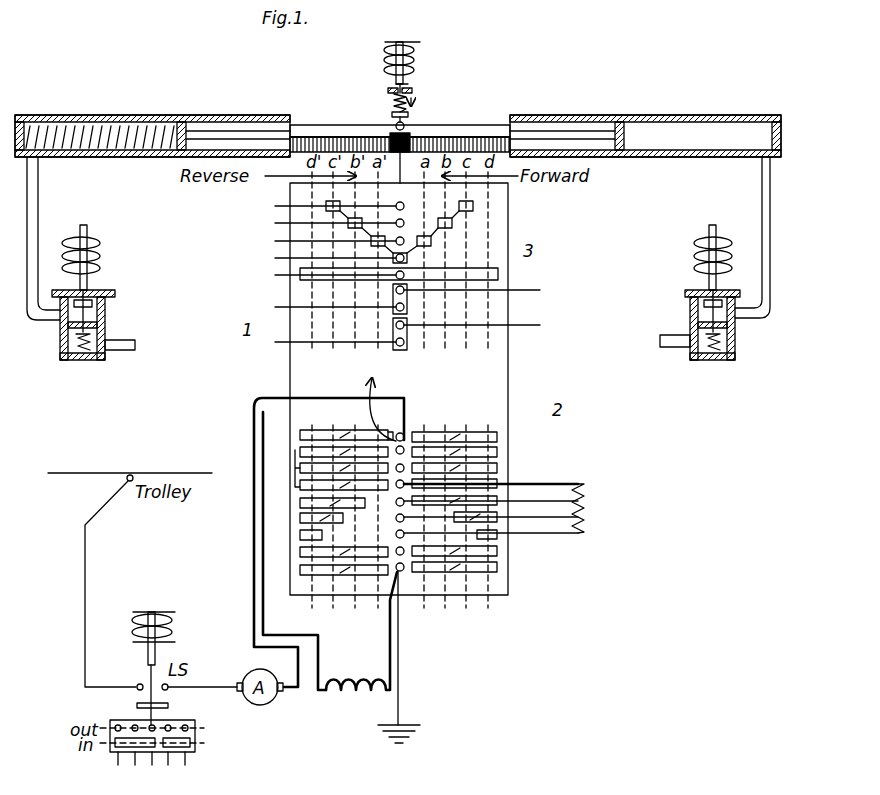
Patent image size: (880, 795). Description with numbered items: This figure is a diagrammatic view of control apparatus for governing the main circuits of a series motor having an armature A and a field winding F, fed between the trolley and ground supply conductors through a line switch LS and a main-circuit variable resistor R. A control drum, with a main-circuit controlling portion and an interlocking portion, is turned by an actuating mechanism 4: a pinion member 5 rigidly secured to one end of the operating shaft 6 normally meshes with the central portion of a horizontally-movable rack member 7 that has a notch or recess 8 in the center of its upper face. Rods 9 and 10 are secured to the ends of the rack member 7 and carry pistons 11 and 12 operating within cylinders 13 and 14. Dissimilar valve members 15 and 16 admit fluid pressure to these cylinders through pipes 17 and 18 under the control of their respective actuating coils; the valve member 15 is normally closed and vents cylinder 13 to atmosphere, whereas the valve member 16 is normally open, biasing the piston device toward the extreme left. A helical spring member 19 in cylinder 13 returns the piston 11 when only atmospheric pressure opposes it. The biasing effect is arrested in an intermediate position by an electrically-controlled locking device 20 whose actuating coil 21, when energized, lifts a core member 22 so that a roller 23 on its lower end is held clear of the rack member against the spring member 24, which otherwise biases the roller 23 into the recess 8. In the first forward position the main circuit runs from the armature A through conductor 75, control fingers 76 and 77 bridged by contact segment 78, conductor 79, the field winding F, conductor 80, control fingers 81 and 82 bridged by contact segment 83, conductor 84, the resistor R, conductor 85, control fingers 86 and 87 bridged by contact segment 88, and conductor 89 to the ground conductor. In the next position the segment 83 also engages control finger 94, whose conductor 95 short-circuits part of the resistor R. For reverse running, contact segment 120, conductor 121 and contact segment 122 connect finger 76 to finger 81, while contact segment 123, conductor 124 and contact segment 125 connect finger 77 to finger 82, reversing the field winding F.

The actuating mechanism 4 is at (400, 122).
The pinion member 5 is at (412, 137).
The operating shaft 6 is at (396, 170).
The rack member 7 is at (302, 140).
The notch or recess 8 is at (408, 120).
The rod or stem 9 is at (250, 131).
The rod or stem 10 is at (545, 131).
The piston 11 is at (183, 124).
The piston 12 is at (618, 124).
The cylinder 13 is at (226, 124).
The cylinder 14 is at (668, 124).
The valve member 15 is at (94, 292).
The valve member 16 is at (692, 292).
The pipe or passage 17 is at (130, 350).
The pipe or passage 18 is at (668, 347).
The helical spring member 19 is at (112, 154).
The locking device 20 is at (389, 63).
The actuating coil 21 is at (386, 44).
The core member 22 is at (408, 74).
The roller 23 is at (392, 120).
The spring member 24 is at (393, 102).
The conductor 75 is at (254, 643).
The control finger 76 is at (398, 433).
The control finger 77 is at (403, 448).
The contact segment 78 is at (470, 440).
The conductor 79 is at (406, 408).
The conductor 80 is at (390, 652).
The control finger 81 is at (403, 466).
The control finger 82 is at (390, 493).
The contact segment 83 is at (497, 480).
The conductor 84 is at (557, 480).
The conductor 85 is at (495, 533).
The control finger 86 is at (397, 548).
The control finger 87 is at (400, 571).
The contact segment 88 is at (500, 565).
The conductor 89 is at (399, 636).
The control finger 94 is at (397, 514).
The conductor 95 is at (526, 504).
The contact segment 120 is at (350, 434).
The conductor 121 is at (390, 402).
The contact segment 122 is at (300, 482).
The contact segment 123 is at (300, 450).
The conductor 124 is at (295, 468).
The contact segment 125 is at (300, 500).
The main-circuit variable resistor R is at (588, 508).